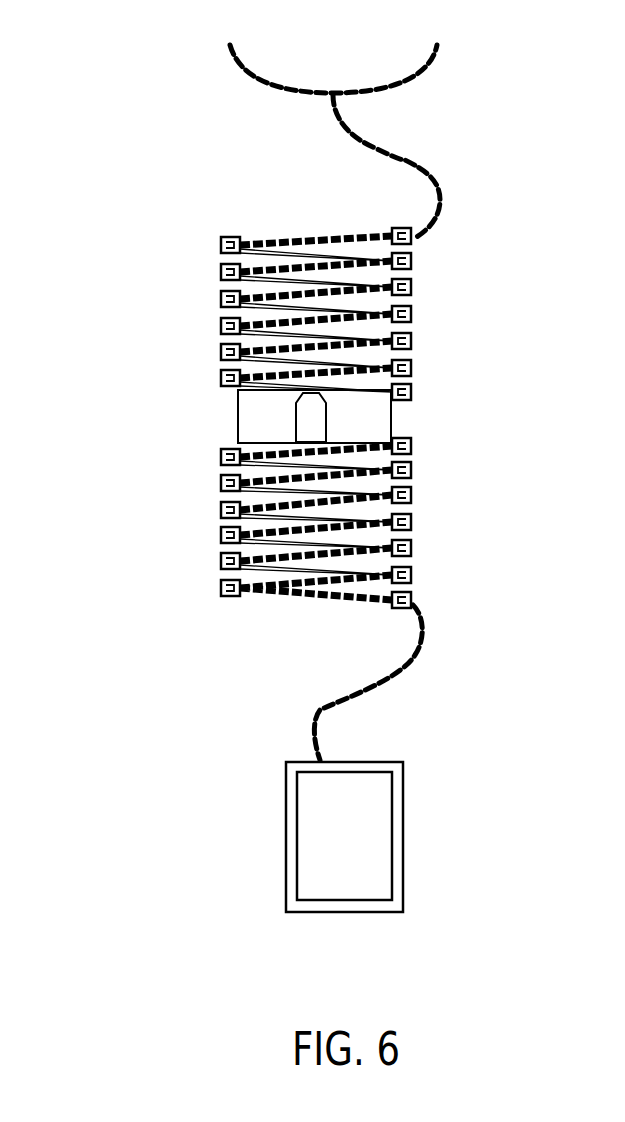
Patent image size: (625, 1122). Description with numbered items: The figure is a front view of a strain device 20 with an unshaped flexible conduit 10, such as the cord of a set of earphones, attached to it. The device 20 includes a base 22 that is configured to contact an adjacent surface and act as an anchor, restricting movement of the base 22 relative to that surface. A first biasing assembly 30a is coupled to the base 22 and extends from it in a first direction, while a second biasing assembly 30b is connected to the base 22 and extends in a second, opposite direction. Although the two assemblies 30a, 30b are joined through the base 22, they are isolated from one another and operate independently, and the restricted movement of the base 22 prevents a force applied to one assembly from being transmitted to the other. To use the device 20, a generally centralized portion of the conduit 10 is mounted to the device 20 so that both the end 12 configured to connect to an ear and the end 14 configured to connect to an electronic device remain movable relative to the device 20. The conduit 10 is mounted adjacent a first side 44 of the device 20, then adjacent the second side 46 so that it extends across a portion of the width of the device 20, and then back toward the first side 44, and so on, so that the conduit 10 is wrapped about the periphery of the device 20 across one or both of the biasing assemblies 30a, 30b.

The flexible conduit 10 is at (100, 88).
The end of the earphones configured to connect to an ear 12 is at (405, 160).
The end of the earphones configured to connect to an electronic device 14 is at (320, 710).
The strain device 20 is at (97, 344).
The base 22 is at (390, 413).
The first biasing assembly 30a is at (442, 311).
The second biasing assembly 30b is at (445, 542).
The first side 44 is at (392, 427).
The second side 46 is at (238, 413).